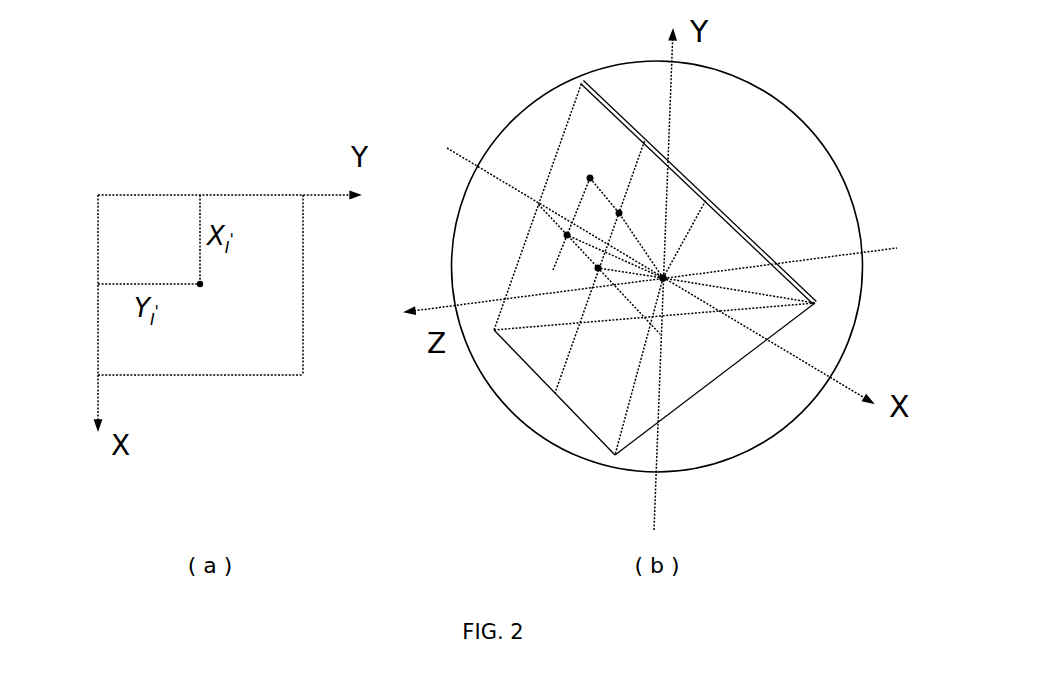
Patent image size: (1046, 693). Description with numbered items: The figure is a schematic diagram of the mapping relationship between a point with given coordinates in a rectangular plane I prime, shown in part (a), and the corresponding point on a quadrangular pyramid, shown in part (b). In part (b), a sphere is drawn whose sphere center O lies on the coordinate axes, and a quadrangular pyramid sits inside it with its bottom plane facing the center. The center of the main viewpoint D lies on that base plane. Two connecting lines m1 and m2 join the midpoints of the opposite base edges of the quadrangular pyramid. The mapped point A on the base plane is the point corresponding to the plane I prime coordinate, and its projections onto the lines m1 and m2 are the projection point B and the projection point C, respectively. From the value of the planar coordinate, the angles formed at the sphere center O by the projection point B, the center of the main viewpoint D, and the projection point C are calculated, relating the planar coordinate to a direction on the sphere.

The sphere center O is at (655, 291).
The center of the main viewpoint D is at (584, 271).
The point A_I' on the quadrangular pyramid A is at (593, 169).
The projection B_I' on m1 B is at (559, 247).
The projection C_I' on m2 C is at (631, 217).
The connecting line between midpoints of opposite base edges m1 is at (600, 273).
The connecting line between midpoints of opposite base edges m2 is at (600, 271).